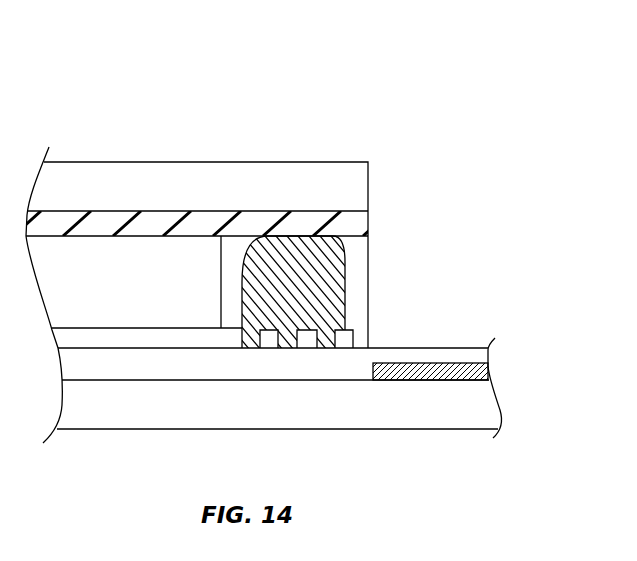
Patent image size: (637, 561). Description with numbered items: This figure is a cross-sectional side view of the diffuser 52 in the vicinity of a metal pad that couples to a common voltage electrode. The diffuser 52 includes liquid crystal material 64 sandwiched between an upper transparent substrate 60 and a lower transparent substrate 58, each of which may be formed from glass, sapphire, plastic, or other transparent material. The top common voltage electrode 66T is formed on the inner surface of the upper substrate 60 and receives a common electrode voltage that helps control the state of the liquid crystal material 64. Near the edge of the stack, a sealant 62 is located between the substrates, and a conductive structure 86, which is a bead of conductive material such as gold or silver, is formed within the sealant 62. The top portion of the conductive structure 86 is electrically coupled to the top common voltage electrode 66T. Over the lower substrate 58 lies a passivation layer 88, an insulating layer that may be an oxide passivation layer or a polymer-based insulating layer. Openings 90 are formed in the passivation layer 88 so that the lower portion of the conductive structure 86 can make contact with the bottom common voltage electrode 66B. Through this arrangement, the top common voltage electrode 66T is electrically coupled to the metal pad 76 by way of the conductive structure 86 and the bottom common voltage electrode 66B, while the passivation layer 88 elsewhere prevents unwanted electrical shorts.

The diffuser 52 is at (396, 108).
The transparent substrate 58 is at (422, 420).
The transparent substrate 60 is at (357, 188).
The sealant 62 is at (358, 288).
The liquid crystal material 64 is at (103, 250).
The top common voltage electrode 66T is at (163, 222).
The bottom common voltage electrode 66B is at (430, 360).
The metal pad 76 is at (488, 374).
The conductive structure 86 is at (297, 258).
The passivation layer 88 is at (135, 342).
The openings 90 is at (253, 355).